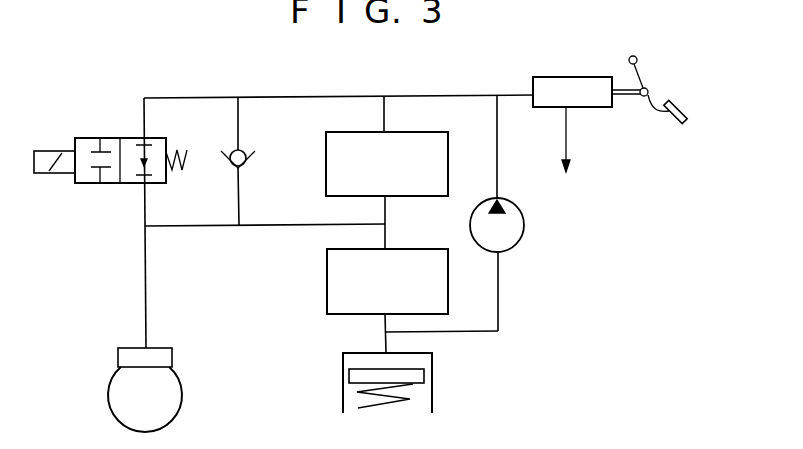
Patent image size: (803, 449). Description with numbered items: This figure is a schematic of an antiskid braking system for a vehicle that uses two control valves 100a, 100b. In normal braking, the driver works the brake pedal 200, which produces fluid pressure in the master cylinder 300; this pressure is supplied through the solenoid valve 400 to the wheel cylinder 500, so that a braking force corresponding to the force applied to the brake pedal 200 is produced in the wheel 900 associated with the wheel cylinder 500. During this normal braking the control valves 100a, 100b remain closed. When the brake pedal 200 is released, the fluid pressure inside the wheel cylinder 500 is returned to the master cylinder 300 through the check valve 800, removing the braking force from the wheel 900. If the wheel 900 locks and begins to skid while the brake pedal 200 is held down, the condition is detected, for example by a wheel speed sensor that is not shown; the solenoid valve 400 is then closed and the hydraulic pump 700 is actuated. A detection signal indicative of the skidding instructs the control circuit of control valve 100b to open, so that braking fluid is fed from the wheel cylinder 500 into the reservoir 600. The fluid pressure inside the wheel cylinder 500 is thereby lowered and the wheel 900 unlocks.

The control valve 100a is at (423, 197).
The control valve 100b is at (327, 279).
The brake pedal 200 is at (678, 102).
The master cylinder 300 is at (597, 109).
The solenoid valve 400 is at (117, 138).
The wheel cylinder 500 is at (162, 351).
The reservoir 600 is at (433, 390).
The hydraulic pump 700 is at (522, 235).
The check valve 800 is at (245, 150).
The wheel 900 is at (177, 390).